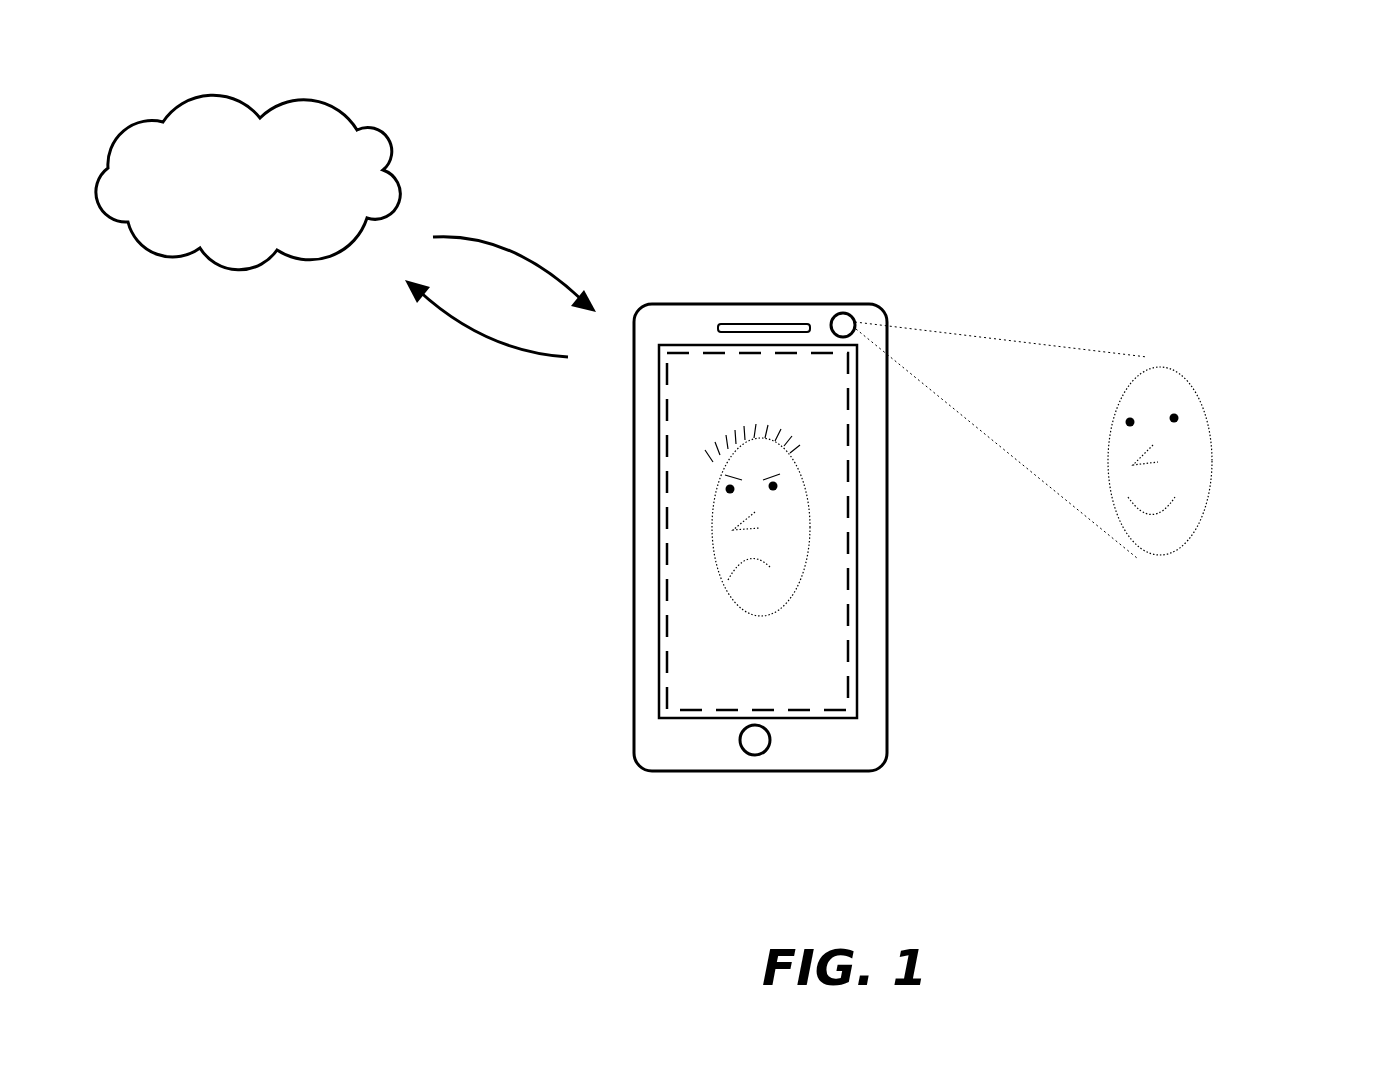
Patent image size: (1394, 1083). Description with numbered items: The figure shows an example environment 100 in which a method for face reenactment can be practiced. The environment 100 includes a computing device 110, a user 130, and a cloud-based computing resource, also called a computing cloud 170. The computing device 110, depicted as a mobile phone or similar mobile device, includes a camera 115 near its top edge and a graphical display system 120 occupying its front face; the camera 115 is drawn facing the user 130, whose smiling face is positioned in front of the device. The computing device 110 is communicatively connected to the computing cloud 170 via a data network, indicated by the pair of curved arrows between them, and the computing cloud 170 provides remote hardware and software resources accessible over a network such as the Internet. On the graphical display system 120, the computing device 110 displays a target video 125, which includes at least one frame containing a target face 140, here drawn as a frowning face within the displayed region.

The environment 100 is at (1326, 130).
The computing device 110 is at (720, 308).
The camera 115 is at (837, 310).
The graphical display system 120 is at (660, 442).
The target video 125 is at (682, 683).
The user 130 is at (1198, 398).
The target face 140 is at (745, 442).
The computing cloud 170 is at (269, 207).